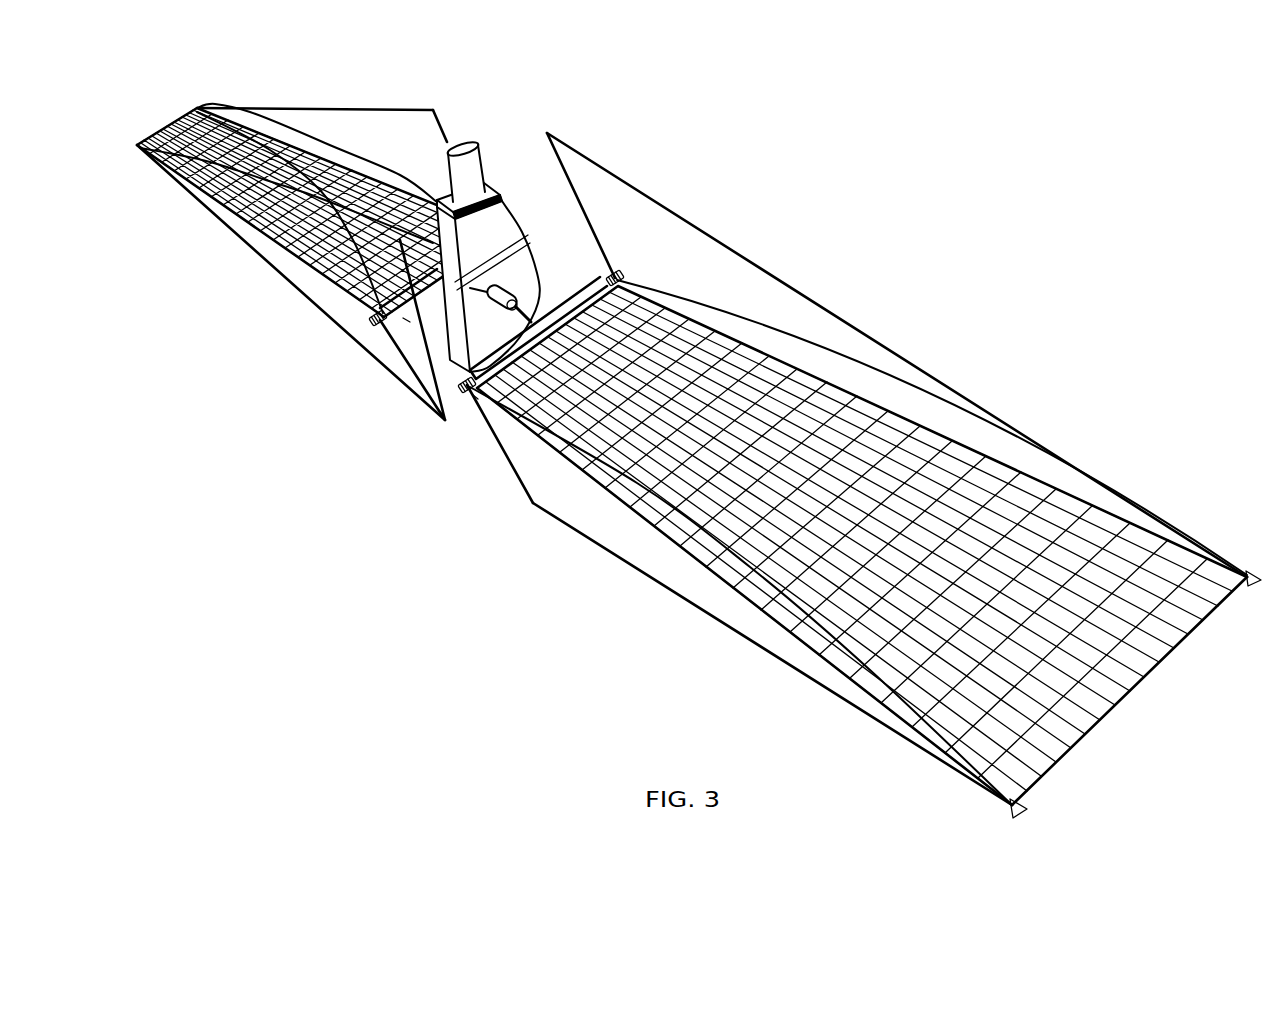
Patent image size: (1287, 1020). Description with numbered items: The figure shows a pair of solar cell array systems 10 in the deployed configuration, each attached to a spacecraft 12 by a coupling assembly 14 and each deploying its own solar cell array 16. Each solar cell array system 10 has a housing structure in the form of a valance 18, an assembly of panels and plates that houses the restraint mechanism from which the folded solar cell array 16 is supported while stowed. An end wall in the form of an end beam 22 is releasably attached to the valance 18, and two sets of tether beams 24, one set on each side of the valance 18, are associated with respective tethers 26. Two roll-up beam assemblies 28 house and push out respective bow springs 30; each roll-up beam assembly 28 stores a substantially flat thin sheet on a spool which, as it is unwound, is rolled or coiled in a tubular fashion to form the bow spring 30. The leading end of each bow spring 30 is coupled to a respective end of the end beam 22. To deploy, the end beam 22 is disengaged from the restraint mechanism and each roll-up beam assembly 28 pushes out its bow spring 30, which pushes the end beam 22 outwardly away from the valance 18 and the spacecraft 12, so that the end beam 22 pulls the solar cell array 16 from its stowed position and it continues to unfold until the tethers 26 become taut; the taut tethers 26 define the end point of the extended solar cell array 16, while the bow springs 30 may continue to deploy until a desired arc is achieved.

The solar cell array system 10 is at (699, 430).
The spacecraft 12 is at (508, 180).
The coupling assembly 14 is at (522, 292).
The solar cell array 16 is at (278, 257).
The valance 18 is at (403, 318).
The end beam 22 is at (1153, 677).
The tether beams 24 is at (445, 128).
The tethers 26 is at (303, 108).
The roll-up beam assembly (RUBA) 28 is at (370, 318).
The bow spring 30 is at (363, 158).